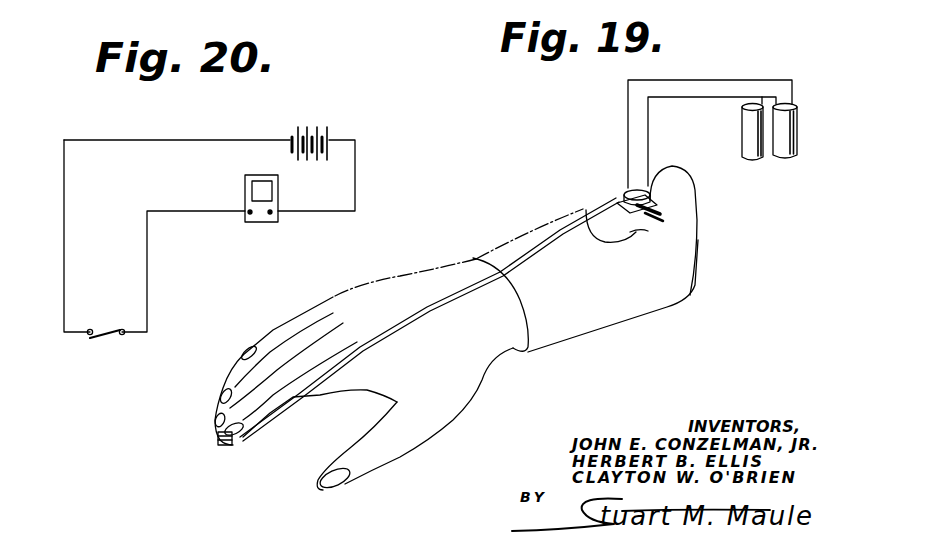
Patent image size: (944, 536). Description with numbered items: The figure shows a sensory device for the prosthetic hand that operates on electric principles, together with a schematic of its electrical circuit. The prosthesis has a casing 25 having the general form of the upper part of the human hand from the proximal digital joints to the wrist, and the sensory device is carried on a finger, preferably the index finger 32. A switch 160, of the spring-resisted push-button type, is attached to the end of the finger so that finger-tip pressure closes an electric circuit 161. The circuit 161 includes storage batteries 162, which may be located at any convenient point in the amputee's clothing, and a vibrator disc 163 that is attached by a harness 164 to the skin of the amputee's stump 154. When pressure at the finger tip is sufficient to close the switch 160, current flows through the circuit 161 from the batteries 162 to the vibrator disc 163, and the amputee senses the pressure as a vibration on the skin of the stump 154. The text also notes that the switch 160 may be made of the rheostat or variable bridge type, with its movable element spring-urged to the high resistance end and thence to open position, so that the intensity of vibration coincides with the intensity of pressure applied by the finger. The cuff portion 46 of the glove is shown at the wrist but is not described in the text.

In FIG. 19, the casing 25 is at (391, 281).
In FIG. 19, the index finger 32 is at (293, 402).
In FIG. 19, the cuff 46 is at (563, 340).
In FIG. 19, the stump of the amputee 154 is at (635, 230).
In FIG. 20, the switch 160 is at (103, 326).
In FIG. 19, the switch 160 is at (233, 440).
In FIG. 20, the electric circuit 161 is at (147, 252).
In FIG. 19, the electric circuit 161 is at (438, 311).
In FIG. 20, the storage batteries 162 is at (330, 133).
In FIG. 19, the storage batteries 162 is at (785, 153).
In FIG. 20, the vibrator disc 163 is at (268, 190).
In FIG. 19, the vibrator disc 163 is at (634, 189).
In FIG. 19, the harness 164 is at (662, 214).